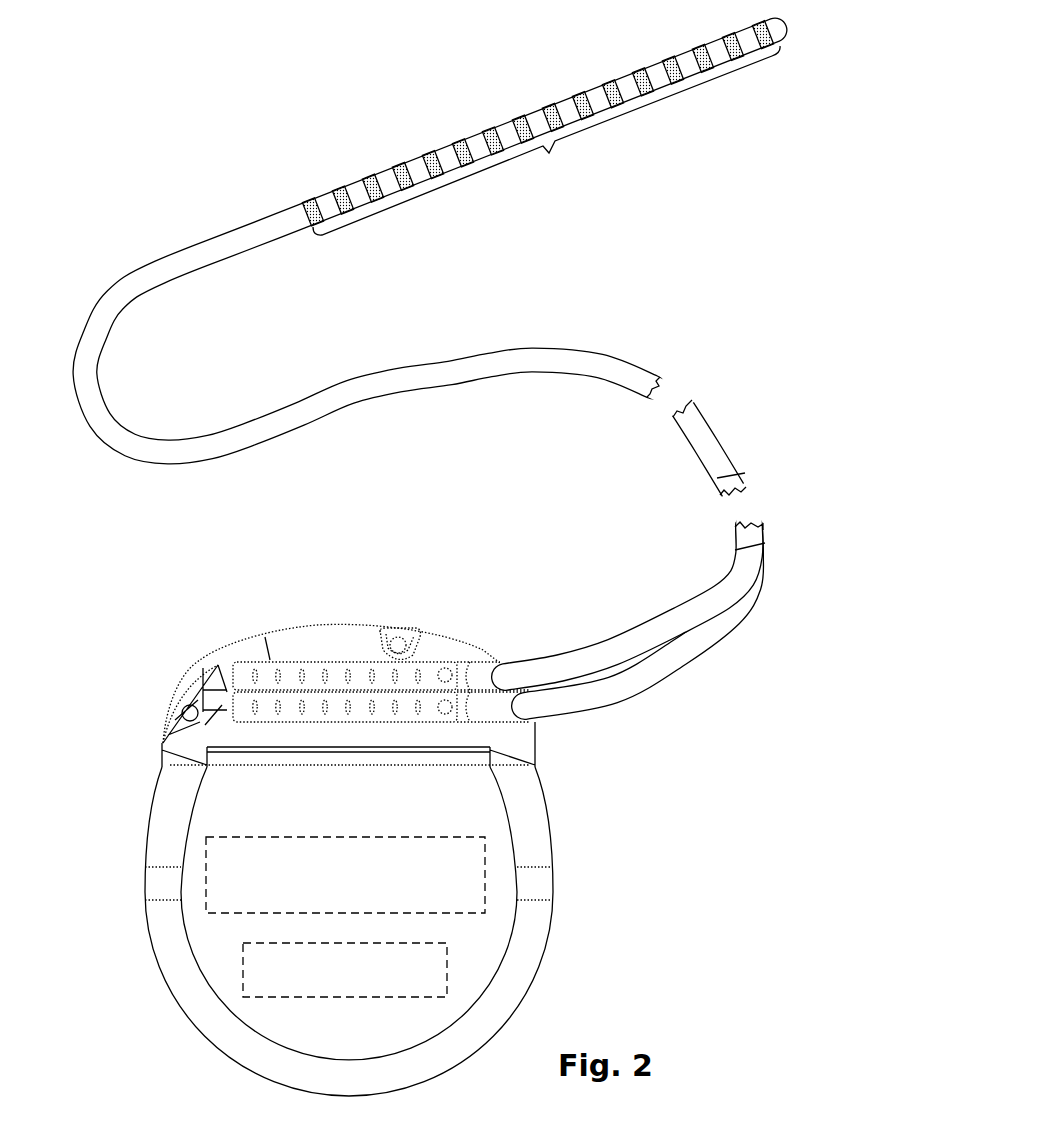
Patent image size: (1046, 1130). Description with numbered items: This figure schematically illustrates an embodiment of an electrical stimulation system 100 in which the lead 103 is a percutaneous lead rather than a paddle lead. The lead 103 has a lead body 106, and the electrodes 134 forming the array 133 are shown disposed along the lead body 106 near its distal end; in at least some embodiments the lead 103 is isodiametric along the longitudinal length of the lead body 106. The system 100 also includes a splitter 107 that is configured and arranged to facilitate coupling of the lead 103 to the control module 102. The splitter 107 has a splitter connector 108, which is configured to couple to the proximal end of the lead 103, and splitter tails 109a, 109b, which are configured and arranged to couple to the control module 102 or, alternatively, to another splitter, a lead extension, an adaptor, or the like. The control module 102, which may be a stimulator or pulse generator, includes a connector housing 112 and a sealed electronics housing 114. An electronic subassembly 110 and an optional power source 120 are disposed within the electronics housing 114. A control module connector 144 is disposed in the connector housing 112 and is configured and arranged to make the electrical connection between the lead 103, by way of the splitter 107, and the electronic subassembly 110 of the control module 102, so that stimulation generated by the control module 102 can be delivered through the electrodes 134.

The electrical stimulation system 100 is at (175, 116).
The control module 102 is at (310, 837).
The lead 103 is at (115, 222).
The lead body 106 is at (578, 360).
The splitter 107 is at (647, 561).
The splitter connector 108 is at (725, 507).
The splitter tail 109a is at (627, 643).
The splitter tail 109b is at (700, 648).
The electronic subassembly 110 is at (220, 878).
The connector housing 112 is at (184, 656).
The sealed electronics housing 114 is at (114, 818).
The power source 120 is at (260, 975).
The array of electrodes 133 is at (546, 140).
The electrode 134 is at (582, 97).
The control module connector 144 is at (293, 660).